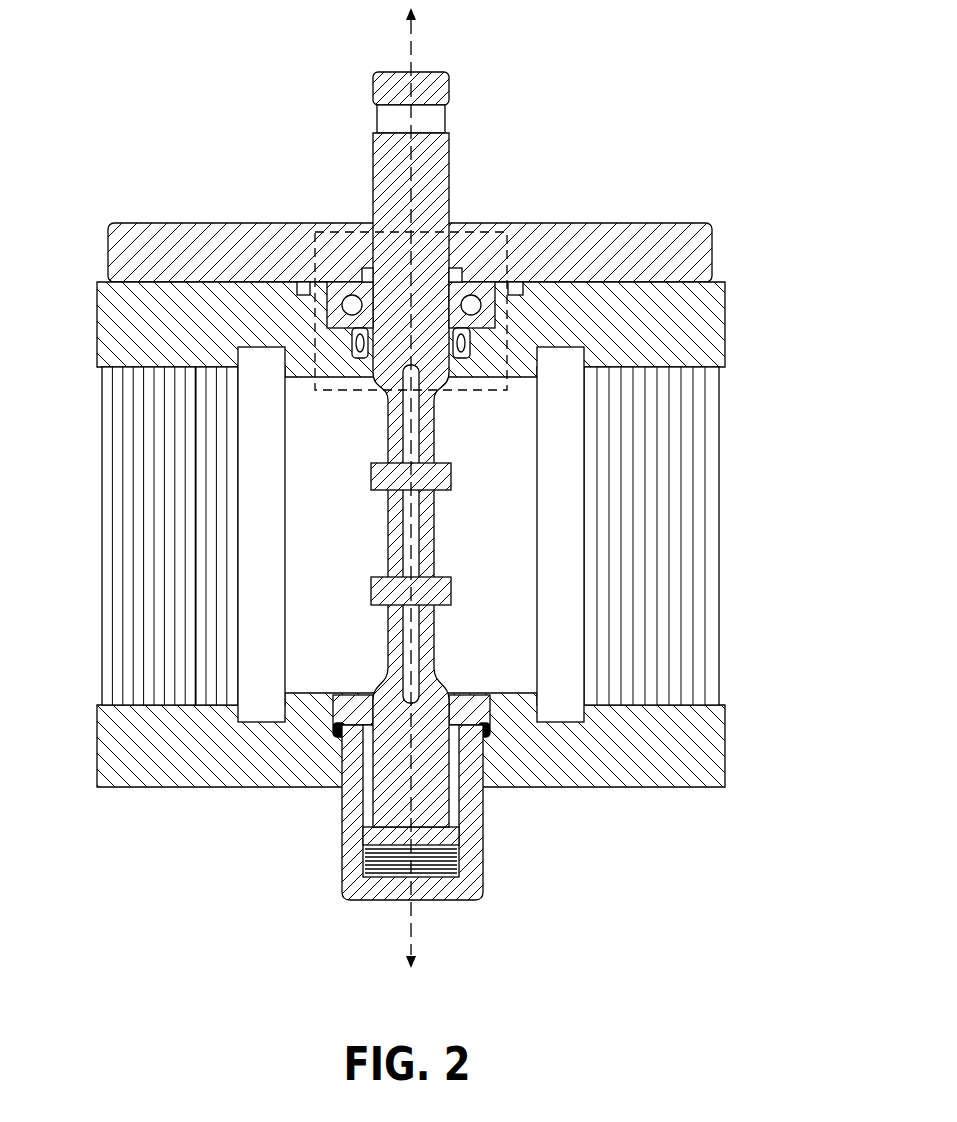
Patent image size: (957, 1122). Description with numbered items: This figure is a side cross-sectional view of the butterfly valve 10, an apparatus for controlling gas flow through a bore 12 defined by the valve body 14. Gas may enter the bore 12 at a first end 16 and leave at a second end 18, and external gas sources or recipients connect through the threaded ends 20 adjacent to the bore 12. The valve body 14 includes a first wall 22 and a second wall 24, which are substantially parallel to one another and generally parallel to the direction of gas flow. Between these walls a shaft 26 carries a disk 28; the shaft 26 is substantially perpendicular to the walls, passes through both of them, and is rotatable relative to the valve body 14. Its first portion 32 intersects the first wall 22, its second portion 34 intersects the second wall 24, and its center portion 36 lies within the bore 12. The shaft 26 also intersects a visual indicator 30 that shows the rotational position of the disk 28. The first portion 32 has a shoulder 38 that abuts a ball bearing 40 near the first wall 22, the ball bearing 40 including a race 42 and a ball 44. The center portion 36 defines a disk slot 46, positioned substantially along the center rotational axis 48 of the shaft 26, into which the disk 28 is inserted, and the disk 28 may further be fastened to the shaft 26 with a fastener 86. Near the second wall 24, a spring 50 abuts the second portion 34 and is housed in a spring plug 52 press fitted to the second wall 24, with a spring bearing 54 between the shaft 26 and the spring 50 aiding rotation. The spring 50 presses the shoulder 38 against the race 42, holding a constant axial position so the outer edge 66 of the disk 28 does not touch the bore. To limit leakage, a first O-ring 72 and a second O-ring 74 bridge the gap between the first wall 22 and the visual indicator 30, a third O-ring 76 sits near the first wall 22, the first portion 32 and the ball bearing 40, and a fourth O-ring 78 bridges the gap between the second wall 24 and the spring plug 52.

The butterfly valve 10 is at (414, 504).
The bore 12 is at (295, 487).
The valve body 14 is at (110, 318).
The first end 16 is at (283, 673).
The second end 18 is at (588, 682).
The threaded ends 20 is at (120, 655).
The first wall 22 is at (293, 328).
The second wall 24 is at (540, 755).
The shaft 26 is at (390, 205).
The disk 28 is at (432, 562).
The visual indicator 30 is at (586, 225).
The first portion 32 is at (422, 247).
The second portion 34 is at (420, 792).
The center portion 36 is at (436, 512).
The shoulder 38 is at (473, 345).
The ball bearing 40 is at (478, 282).
The race 42 is at (326, 326).
The ball 44 is at (350, 312).
The disk slot 46 is at (433, 693).
The center rotational axis 48 is at (405, 950).
The spring 50 is at (445, 878).
The spring plug 52 is at (355, 873).
The spring bearing 54 is at (453, 837).
The outer edge 66 is at (421, 402).
The first O-ring 72 is at (361, 270).
The second O-ring 74 is at (303, 282).
The third O-ring 76 is at (357, 340).
The fourth O-ring 78 is at (333, 697).
The fastener 86 is at (383, 490).